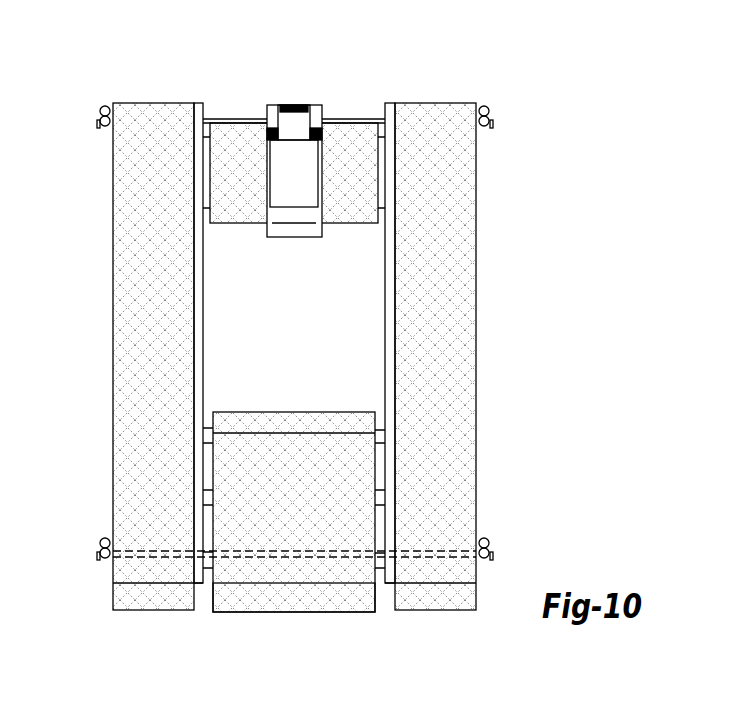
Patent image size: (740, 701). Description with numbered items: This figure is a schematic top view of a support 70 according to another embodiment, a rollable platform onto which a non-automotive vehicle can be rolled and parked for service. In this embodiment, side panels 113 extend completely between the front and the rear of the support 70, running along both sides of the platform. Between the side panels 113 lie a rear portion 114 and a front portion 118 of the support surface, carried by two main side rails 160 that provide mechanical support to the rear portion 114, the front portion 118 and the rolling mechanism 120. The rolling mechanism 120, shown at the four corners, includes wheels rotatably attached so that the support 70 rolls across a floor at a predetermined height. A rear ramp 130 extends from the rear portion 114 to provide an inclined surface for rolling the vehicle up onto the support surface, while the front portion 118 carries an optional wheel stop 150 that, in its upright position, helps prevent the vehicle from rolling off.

The support 70 is at (310, 349).
The side panels 113 is at (115, 272).
The rear portion 114 is at (294, 510).
The front portion 118 is at (243, 128).
The rolling mechanism 120 is at (97, 104).
The rear ramp 130 is at (341, 608).
The wheel stop 150 is at (294, 93).
The side rails 160 is at (200, 327).